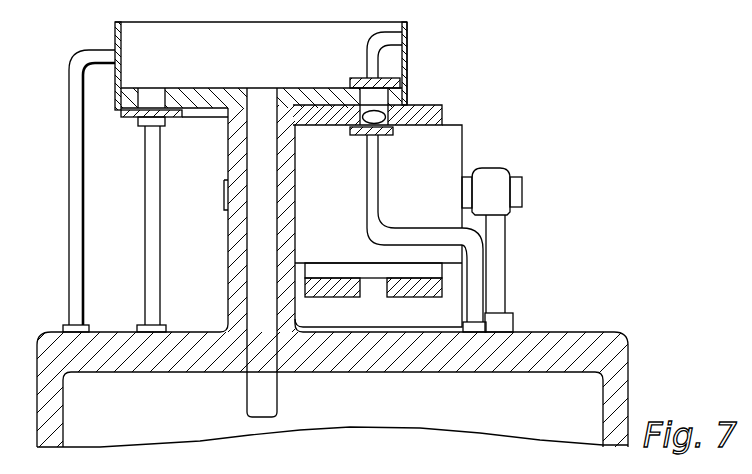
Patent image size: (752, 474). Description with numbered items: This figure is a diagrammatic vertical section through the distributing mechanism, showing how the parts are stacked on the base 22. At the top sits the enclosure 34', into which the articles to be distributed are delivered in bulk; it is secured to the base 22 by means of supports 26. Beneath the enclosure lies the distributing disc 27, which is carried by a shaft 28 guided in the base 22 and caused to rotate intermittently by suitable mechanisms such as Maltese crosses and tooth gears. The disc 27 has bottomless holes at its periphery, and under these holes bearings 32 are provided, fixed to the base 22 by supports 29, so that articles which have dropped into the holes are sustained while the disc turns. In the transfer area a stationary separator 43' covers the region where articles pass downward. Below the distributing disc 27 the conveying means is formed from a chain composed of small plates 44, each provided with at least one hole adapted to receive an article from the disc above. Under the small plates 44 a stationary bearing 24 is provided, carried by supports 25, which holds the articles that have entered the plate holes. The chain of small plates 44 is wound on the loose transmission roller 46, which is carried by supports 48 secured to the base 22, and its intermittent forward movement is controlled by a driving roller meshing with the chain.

The base 22 is at (547, 338).
The stationary bearing 24 is at (358, 133).
The supports 25 is at (372, 193).
The supports 26 is at (78, 207).
The distributing disc 27 is at (197, 90).
The shaft 28 is at (268, 393).
The supports 29 is at (152, 230).
The bearings 32 is at (130, 118).
The enclosure 34' is at (227, 66).
The stationary separator 43' is at (359, 60).
The small plates 44 is at (428, 105).
The loose transmission roller 46 is at (438, 138).
The supports 48 is at (492, 177).